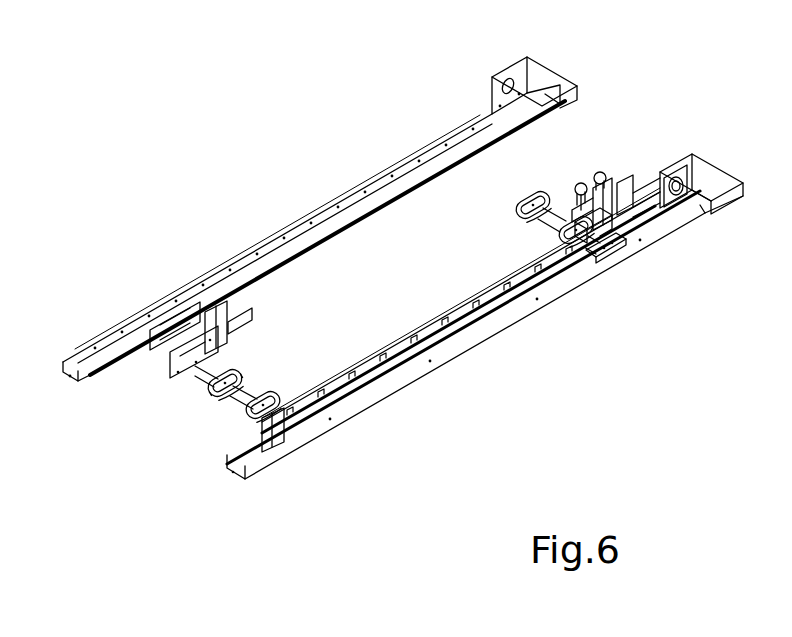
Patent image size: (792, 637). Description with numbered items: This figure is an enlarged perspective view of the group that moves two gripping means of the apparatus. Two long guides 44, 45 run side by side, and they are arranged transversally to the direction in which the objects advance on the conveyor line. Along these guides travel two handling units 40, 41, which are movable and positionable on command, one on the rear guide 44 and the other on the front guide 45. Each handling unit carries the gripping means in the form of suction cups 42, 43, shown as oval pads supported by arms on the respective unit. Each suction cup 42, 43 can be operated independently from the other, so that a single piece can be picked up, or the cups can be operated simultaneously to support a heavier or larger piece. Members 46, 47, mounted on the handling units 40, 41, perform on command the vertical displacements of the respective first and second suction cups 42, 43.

The handling unit 40 is at (182, 372).
The handling unit 41 is at (598, 250).
The suction cup 42 is at (247, 413).
The suction cup 43 is at (558, 243).
The guide 44 is at (349, 222).
The guide 45 is at (460, 322).
The member 46 is at (240, 327).
The member 47 is at (609, 197).